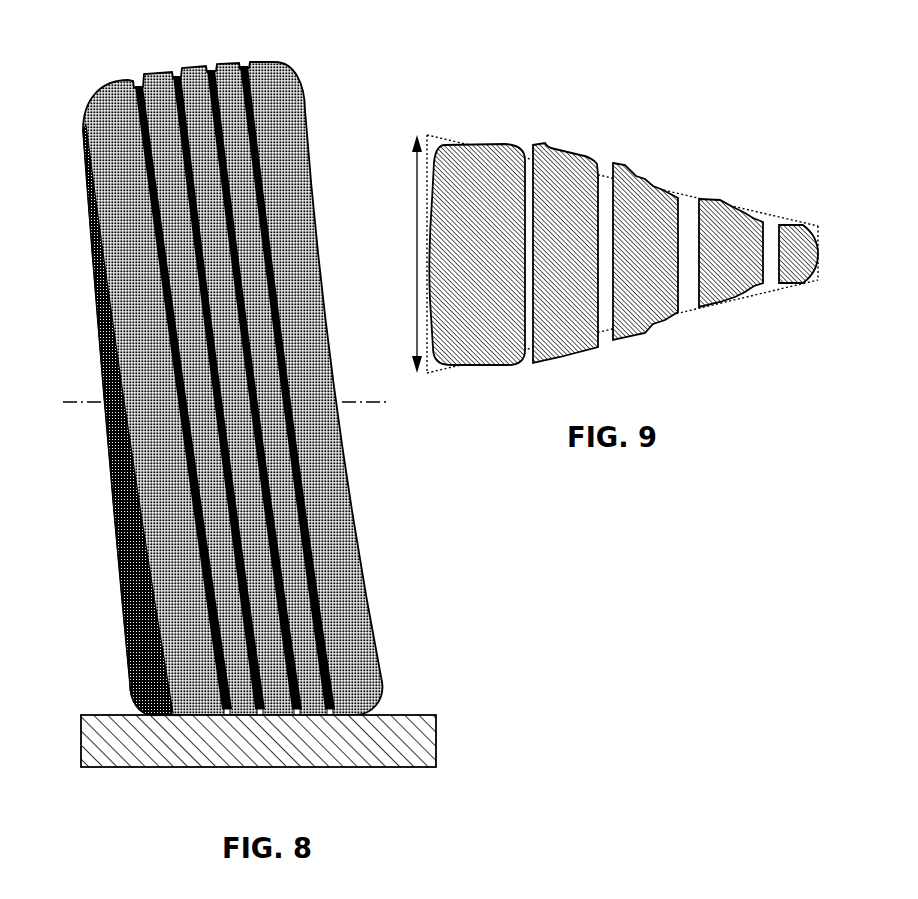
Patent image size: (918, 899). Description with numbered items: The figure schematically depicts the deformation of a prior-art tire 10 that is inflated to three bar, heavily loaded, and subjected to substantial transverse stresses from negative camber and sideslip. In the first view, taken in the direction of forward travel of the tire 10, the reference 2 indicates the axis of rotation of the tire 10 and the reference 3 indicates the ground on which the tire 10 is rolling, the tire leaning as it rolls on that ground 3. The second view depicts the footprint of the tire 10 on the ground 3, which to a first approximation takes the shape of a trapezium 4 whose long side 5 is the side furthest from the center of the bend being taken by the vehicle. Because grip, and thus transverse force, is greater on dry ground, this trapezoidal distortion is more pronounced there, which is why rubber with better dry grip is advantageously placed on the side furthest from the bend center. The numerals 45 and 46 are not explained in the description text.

In FIG. 8, the tire 10 is at (65, 86).
In FIG. 8, the axis of rotation 2 is at (214, 403).
In FIG. 8, the ground 3 is at (125, 733).
In FIG. 9, the trapezium 4 is at (604, 175).
In FIG. 9, the long side 5 is at (407, 254).
In FIG. 8, the contact edge 45 is at (173, 714).
In FIG. 8, the ground surface 46 is at (366, 716).